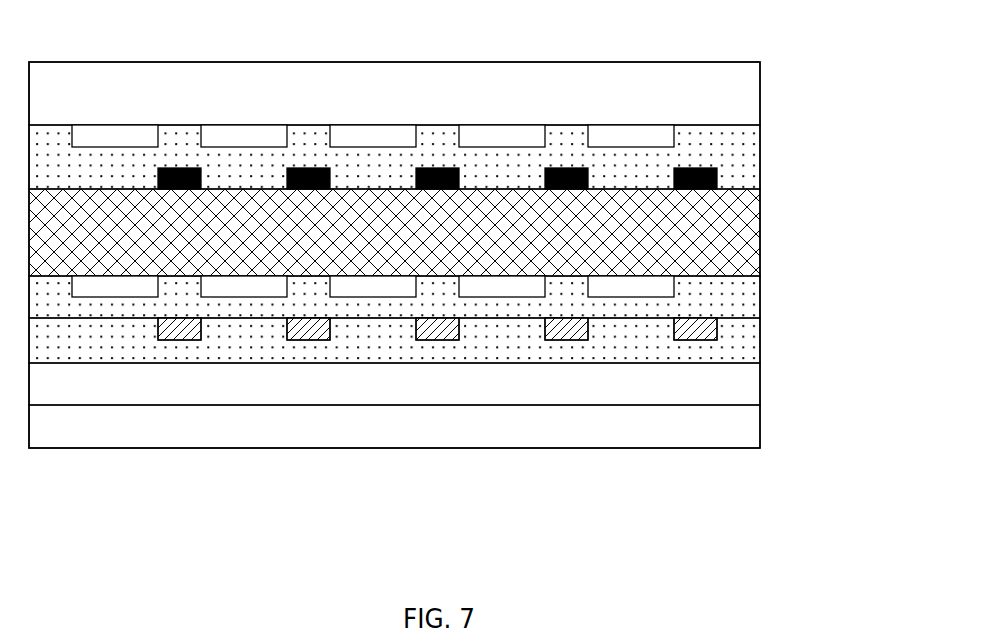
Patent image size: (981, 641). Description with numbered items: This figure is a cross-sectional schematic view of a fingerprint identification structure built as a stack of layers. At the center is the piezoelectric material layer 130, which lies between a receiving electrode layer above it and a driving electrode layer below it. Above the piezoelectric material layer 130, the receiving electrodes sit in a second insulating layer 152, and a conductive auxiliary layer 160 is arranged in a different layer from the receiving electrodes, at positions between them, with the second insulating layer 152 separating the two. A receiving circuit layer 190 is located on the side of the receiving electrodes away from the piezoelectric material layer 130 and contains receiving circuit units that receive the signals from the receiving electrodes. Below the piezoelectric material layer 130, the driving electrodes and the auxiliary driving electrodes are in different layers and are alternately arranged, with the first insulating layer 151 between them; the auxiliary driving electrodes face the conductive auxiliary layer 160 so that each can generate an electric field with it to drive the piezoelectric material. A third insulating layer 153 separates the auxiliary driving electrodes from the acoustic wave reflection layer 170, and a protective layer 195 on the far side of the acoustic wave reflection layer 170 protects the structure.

The receiving circuit layer 190 is at (394, 69).
The conductive auxiliary layer 160 is at (437, 101).
The second insulating layer 152 is at (394, 101).
The piezoelectric material layer 130 is at (394, 370).
The acoustic wave reflection layer 170 is at (394, 436).
The third insulating layer 153 is at (394, 414).
The first insulating layer 151 is at (394, 414).
The protective layer 195 is at (402, 478).